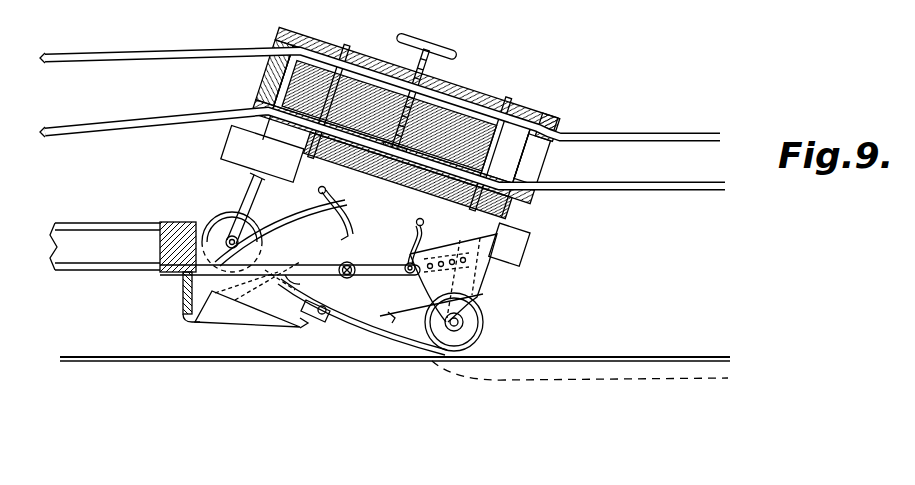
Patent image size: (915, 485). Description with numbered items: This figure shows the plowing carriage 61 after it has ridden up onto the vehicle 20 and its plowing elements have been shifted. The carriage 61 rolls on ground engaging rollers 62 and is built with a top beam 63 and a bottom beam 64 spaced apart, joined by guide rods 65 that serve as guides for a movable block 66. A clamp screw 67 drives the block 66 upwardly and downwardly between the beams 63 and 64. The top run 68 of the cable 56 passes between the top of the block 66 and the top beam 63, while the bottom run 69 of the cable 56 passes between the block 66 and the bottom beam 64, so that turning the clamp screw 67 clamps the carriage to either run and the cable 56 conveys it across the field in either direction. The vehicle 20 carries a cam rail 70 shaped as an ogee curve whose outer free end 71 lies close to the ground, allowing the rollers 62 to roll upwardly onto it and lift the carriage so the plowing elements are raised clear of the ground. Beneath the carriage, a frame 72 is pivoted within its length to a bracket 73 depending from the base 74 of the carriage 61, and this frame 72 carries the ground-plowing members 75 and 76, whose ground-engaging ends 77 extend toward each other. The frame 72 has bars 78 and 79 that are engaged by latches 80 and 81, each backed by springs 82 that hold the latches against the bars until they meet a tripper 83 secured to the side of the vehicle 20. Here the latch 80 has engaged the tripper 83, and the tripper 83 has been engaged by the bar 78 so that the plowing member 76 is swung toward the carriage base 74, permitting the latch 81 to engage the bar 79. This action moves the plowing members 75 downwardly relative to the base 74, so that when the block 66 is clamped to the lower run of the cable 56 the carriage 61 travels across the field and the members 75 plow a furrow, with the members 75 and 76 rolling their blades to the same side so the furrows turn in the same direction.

The vehicle 20 is at (116, 267).
The cable 56 is at (637, 146).
The carriage 61 is at (560, 123).
The ground engaging rollers 62 is at (248, 235).
The top beam 63 is at (472, 94).
The bottom beam 64 is at (516, 216).
The guide rods 65 is at (345, 53).
The movable block 66 is at (302, 82).
The clamp screw 67 is at (446, 56).
The top run 68 is at (180, 53).
The bottom run 69 is at (140, 122).
The cam rails 70 is at (312, 314).
The outer free ends 71 is at (367, 330).
The frame 72 is at (362, 273).
The bracket 73 is at (351, 261).
The base 74 is at (243, 160).
The ground-plowing members 75 is at (240, 307).
The ground-plowing member 76 is at (488, 273).
The ground-engaging ends 77 is at (393, 321).
The bar 78 is at (286, 271).
The bar 79 is at (403, 272).
The latch 80 is at (336, 213).
The latch 81 is at (399, 258).
The springs 82 is at (318, 193).
The trippers 83 is at (309, 241).